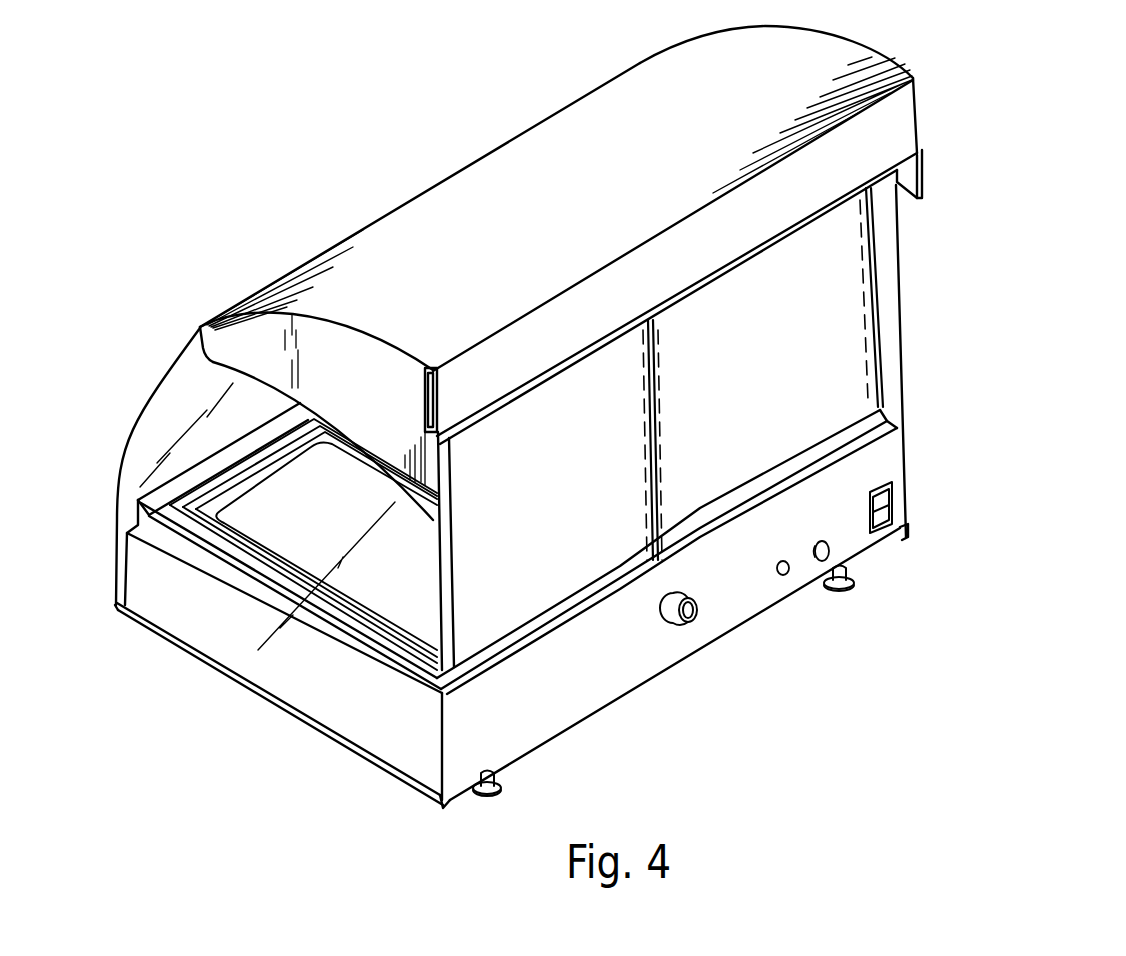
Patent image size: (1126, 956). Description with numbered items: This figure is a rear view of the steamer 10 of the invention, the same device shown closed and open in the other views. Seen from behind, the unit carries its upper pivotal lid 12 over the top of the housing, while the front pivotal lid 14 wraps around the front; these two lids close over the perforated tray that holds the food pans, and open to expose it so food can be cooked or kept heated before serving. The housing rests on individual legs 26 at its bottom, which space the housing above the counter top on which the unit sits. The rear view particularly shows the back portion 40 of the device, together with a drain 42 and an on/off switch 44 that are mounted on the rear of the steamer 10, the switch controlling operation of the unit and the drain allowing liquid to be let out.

The steamer 10 is at (976, 145).
The upper pivotal lid 12 is at (373, 227).
The front pivotal lid 14 is at (140, 417).
The legs 26 is at (505, 783).
The back portion 40 is at (832, 361).
The drain 42 is at (693, 614).
The on/off switch 44 is at (892, 508).